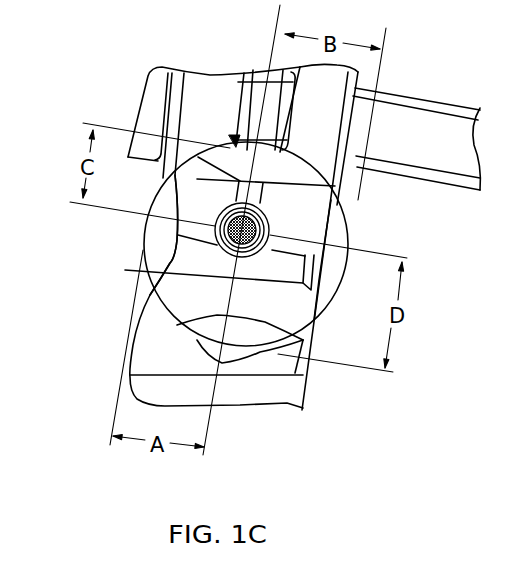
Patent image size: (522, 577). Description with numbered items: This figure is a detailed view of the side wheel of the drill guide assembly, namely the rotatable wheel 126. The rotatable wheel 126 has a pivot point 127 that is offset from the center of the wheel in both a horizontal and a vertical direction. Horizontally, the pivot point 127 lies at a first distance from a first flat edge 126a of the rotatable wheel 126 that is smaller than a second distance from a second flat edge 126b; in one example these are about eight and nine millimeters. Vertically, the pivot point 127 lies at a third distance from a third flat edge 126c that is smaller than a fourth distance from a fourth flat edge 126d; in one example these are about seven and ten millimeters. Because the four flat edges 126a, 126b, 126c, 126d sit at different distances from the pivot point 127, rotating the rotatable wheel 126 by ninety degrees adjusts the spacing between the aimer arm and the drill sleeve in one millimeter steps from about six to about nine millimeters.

The rotatable wheel 126 is at (235, 327).
The first flat edge 126a is at (143, 226).
The second flat edge 126b is at (343, 237).
The third flat edge 126c is at (234, 143).
The fourth flat edge 126d is at (195, 346).
The pivot point 127 is at (236, 245).